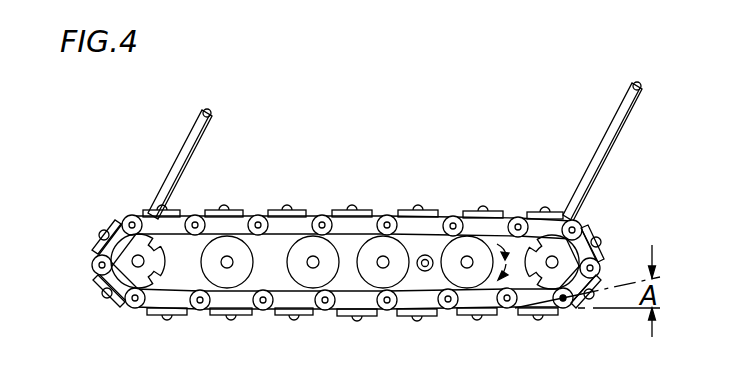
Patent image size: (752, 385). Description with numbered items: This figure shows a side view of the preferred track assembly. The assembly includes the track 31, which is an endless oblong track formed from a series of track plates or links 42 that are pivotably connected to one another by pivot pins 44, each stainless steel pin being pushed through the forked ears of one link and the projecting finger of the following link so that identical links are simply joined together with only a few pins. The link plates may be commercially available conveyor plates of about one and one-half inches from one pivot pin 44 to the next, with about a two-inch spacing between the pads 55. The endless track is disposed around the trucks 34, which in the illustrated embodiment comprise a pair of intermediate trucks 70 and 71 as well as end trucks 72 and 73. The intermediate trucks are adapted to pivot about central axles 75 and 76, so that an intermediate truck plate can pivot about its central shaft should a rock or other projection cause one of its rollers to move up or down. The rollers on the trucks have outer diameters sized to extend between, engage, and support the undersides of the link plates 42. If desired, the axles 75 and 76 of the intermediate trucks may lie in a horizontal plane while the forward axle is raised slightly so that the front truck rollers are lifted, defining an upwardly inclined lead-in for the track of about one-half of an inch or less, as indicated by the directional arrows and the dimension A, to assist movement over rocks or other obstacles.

The track 31 is at (435, 195).
The trucks 34 is at (255, 220).
The link plates 42 is at (217, 228).
The pivot pins 44 is at (198, 220).
The pads 55 is at (235, 315).
The intermediate truck 70 is at (428, 253).
The intermediate truck 71 is at (287, 247).
The end truck 72 is at (598, 243).
The end truck 73 is at (122, 250).
The central axle 75 is at (423, 271).
The central axle 76 is at (314, 268).